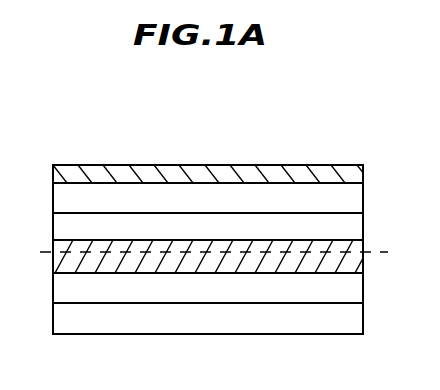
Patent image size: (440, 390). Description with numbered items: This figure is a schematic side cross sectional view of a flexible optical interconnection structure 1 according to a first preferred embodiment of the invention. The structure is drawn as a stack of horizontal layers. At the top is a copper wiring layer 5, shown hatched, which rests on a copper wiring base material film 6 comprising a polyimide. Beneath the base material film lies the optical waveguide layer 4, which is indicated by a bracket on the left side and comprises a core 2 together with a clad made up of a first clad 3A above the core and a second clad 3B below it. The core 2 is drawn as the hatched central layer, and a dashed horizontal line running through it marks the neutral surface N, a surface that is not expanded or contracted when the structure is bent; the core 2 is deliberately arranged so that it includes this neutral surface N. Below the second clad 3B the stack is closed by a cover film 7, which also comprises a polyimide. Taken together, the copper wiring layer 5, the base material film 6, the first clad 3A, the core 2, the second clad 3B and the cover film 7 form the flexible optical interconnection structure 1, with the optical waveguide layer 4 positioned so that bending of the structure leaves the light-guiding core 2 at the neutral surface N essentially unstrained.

The flexible optical interconnection structure 1 is at (73, 137).
The optical waveguide layer 4 is at (44, 213).
The copper wiring layer 5 is at (362, 177).
The copper wiring base material film 6 is at (358, 202).
The first clad 3A is at (358, 230).
The neutral surface N is at (377, 253).
The core 2 is at (362, 261).
The second clad 3B is at (359, 287).
The cover film 7 is at (359, 320).